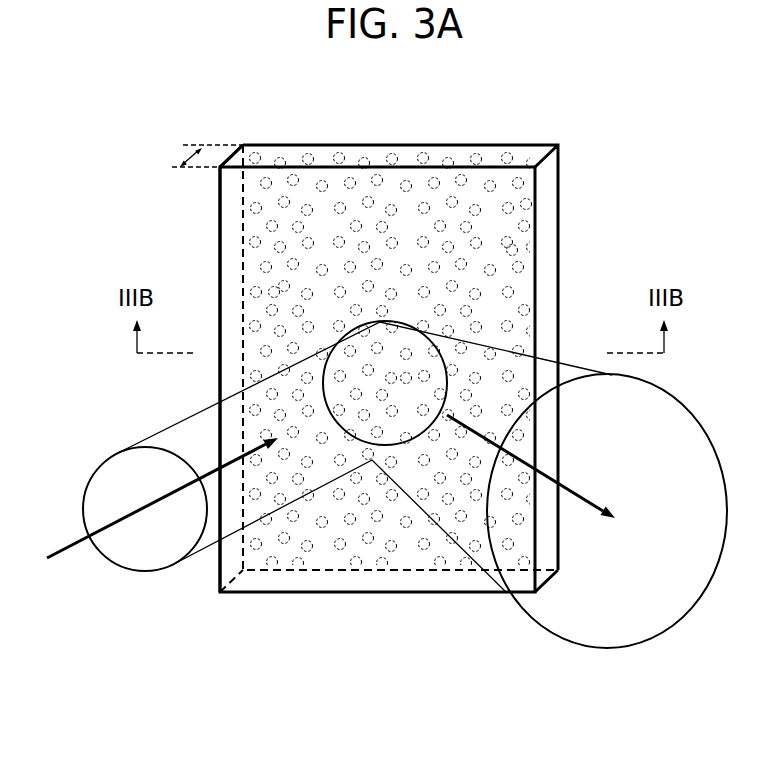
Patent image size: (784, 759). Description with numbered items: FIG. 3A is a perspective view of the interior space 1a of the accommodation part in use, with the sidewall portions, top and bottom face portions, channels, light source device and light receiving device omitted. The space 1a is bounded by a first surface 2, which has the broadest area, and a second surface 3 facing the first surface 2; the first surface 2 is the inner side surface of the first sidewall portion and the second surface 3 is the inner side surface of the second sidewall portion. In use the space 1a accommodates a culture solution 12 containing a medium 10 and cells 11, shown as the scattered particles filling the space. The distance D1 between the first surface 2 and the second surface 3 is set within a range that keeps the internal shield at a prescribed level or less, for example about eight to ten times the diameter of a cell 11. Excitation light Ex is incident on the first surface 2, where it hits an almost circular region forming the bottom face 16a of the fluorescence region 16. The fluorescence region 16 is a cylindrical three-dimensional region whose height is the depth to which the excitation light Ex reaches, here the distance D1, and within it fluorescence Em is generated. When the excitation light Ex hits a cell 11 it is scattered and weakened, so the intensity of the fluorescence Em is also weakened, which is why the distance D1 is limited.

The space 1a is at (417, 336).
The first surface 2 is at (232, 230).
The second surface 3 is at (268, 289).
The medium 10 is at (520, 200).
The cell 11 is at (518, 248).
The culture solution 12 is at (617, 187).
The fluorescence region 16 is at (385, 322).
The bottom face 16a is at (415, 375).
The distance D1 is at (197, 152).
The excitation light Ex is at (165, 440).
The fluorescence Em is at (712, 472).